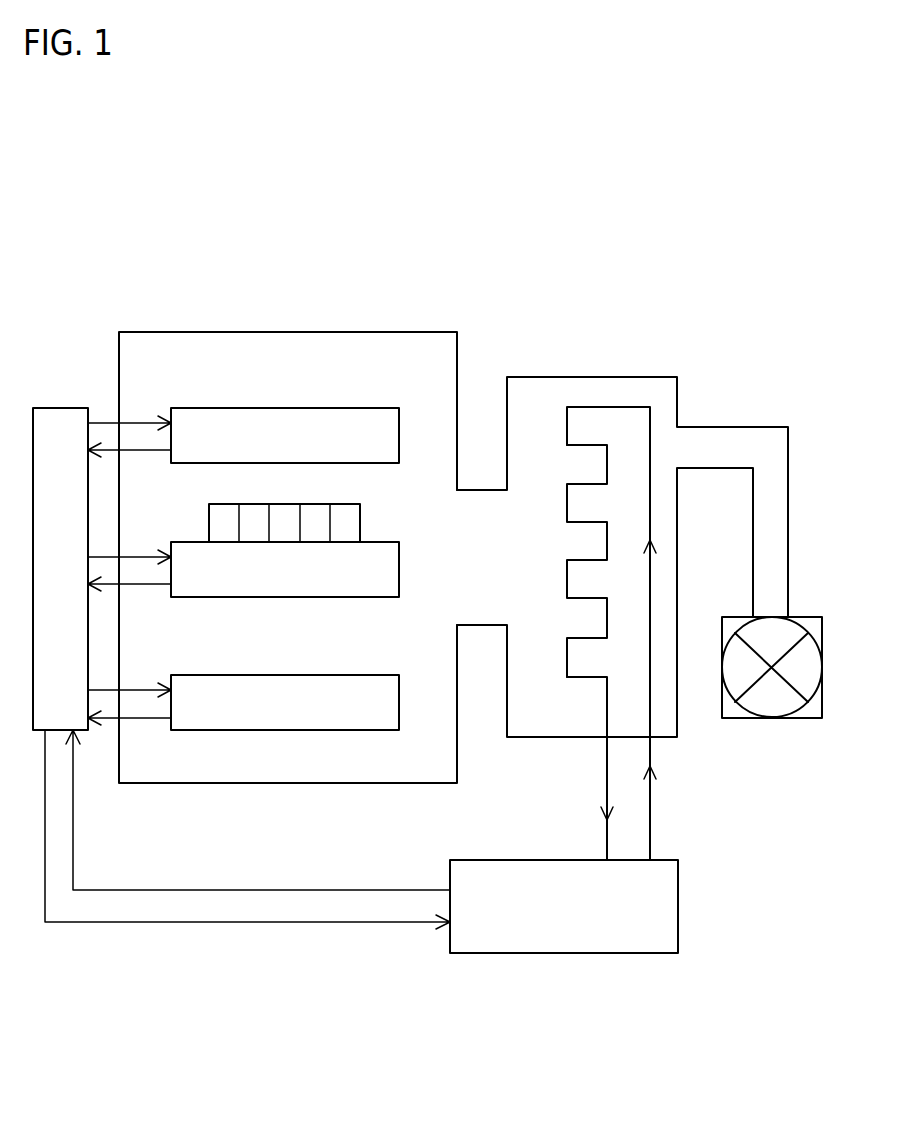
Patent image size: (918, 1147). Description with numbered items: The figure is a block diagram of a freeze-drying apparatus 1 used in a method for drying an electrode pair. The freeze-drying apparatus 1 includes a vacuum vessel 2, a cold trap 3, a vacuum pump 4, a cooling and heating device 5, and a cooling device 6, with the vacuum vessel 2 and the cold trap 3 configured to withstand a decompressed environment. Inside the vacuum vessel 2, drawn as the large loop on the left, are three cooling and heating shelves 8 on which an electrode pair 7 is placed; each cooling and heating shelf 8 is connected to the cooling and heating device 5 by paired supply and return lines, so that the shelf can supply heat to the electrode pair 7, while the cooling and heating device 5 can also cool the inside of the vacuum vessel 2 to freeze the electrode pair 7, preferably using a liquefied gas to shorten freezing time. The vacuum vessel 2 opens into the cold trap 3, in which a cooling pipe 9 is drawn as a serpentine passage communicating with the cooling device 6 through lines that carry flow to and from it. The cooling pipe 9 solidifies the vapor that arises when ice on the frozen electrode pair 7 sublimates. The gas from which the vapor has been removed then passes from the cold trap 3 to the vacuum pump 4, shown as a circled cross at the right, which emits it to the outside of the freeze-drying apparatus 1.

The freeze-drying apparatus 1 is at (715, 317).
The vacuum vessel 2 is at (384, 332).
The cold trap 3 is at (624, 377).
The vacuum pump 4 is at (808, 617).
The cooling and heating device 5 is at (60, 408).
The cooling device 6 is at (667, 860).
The electrode pair 7 is at (362, 513).
The cooling and heating shelf 8 is at (387, 408).
The cooling pipe 9 is at (567, 578).